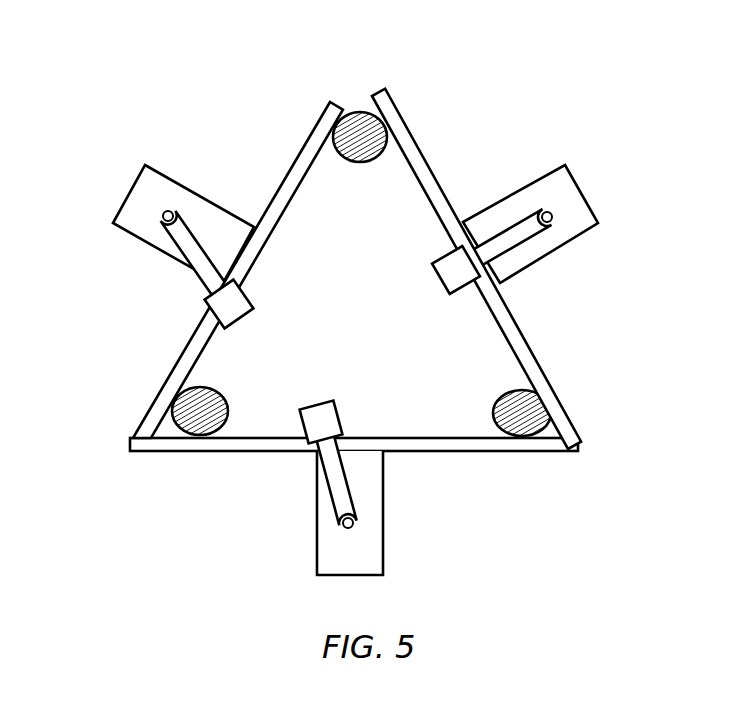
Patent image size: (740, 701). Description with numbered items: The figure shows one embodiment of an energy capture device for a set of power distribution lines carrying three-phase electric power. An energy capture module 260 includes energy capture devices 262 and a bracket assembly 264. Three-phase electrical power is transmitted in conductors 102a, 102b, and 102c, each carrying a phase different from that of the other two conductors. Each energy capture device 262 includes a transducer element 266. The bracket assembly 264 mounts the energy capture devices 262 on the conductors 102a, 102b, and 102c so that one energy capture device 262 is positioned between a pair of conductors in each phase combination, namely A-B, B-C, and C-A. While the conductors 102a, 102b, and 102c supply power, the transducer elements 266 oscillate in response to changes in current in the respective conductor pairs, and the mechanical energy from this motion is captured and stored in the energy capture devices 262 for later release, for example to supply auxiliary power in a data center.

The energy capture module 260 is at (198, 108).
The energy capture device 262 is at (141, 229).
The bracket assembly 264 is at (503, 336).
The transducer element 266 is at (238, 300).
The conductor 102a is at (167, 412).
The conductor 102b is at (326, 133).
The conductor 102c is at (552, 412).